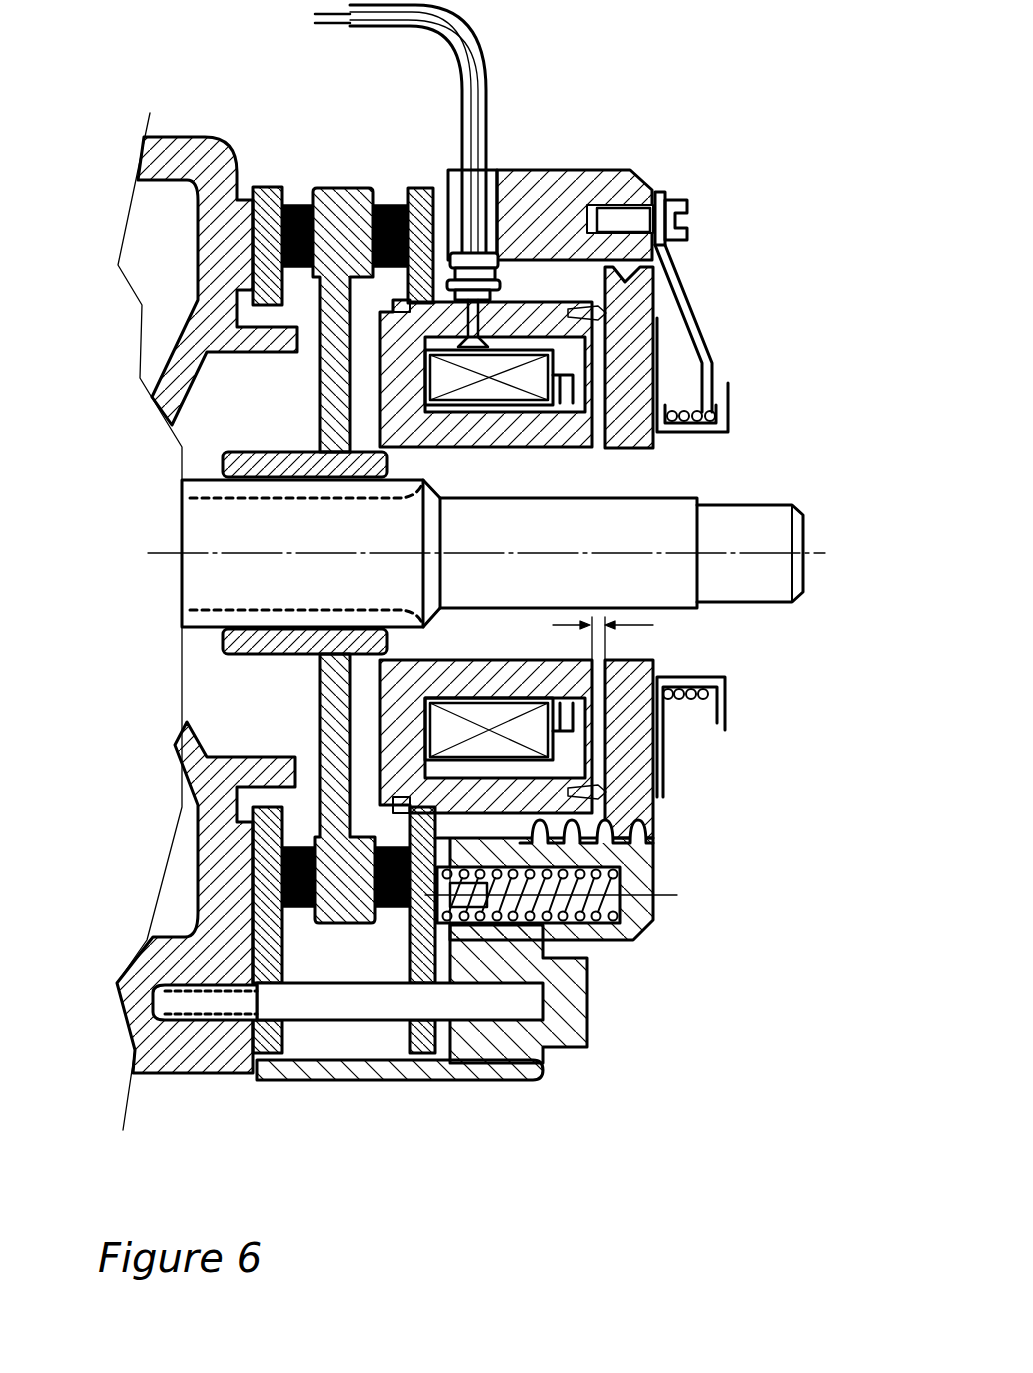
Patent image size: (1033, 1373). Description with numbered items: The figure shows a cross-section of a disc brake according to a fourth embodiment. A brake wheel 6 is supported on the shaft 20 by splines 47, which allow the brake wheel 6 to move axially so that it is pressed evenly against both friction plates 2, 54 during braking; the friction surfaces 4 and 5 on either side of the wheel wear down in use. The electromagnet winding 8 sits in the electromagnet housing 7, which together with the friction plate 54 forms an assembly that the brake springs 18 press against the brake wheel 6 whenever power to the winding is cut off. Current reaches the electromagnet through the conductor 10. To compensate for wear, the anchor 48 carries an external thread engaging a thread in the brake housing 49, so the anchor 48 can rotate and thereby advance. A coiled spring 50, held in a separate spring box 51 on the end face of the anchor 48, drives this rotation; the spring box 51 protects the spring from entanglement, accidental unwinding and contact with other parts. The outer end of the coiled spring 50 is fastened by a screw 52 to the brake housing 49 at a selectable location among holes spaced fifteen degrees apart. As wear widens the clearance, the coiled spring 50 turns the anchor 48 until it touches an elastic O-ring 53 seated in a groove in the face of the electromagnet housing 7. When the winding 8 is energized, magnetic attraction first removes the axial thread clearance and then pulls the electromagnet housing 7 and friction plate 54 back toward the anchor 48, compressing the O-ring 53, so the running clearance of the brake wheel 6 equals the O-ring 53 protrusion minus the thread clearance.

The friction plate 2 is at (268, 187).
The friction surface 4 is at (290, 204).
The friction surface 5 is at (398, 205).
The brake wheel 6 is at (348, 188).
The electromagnet housing 7 is at (560, 448).
The electromagnet winding 8 is at (553, 373).
The conductor 10 is at (458, 43).
The brake spring 18 is at (606, 944).
The shaft 20 is at (768, 596).
The splines 47 is at (292, 492).
The anchor 48 is at (645, 809).
The brake housing 49 is at (593, 170).
The coiled spring 50 is at (693, 312).
The spring box 51 is at (728, 404).
The screw 52 is at (680, 198).
The O-ring 53 is at (603, 776).
The friction plate 54 is at (426, 188).